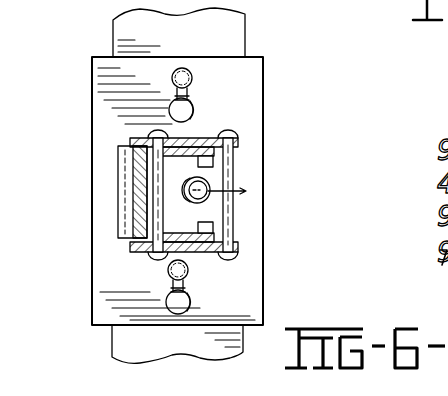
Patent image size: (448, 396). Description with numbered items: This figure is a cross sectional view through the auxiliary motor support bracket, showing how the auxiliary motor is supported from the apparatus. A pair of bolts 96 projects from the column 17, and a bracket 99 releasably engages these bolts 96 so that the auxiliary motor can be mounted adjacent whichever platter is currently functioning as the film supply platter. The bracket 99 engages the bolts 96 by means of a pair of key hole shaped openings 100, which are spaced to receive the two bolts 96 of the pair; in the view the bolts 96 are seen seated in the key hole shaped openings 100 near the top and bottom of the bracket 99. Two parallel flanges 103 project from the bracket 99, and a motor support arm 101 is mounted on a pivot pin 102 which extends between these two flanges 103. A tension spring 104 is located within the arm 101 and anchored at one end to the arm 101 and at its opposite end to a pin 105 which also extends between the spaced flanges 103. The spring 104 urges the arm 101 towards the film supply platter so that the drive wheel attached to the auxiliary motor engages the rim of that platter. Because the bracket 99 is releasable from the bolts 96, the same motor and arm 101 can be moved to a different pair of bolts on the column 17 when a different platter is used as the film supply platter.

The column 17 is at (240, 25).
The bracket 99 is at (263, 58).
The bolts 96 is at (197, 45).
The key hole shaped openings 100 is at (205, 98).
The motor support arm 101 is at (140, 186).
The pivot pin 102 is at (153, 211).
The flanges 103 is at (150, 136).
The tension spring 104 is at (210, 184).
The pin 105 is at (227, 207).